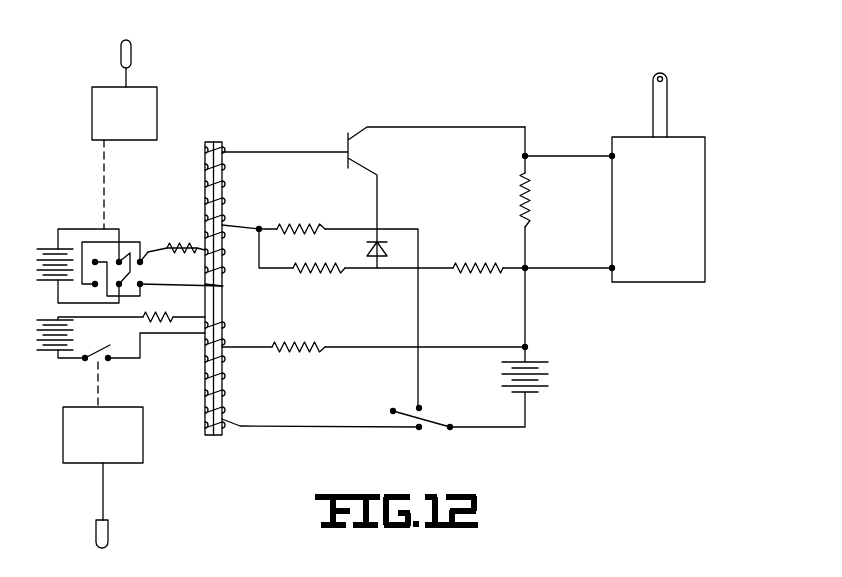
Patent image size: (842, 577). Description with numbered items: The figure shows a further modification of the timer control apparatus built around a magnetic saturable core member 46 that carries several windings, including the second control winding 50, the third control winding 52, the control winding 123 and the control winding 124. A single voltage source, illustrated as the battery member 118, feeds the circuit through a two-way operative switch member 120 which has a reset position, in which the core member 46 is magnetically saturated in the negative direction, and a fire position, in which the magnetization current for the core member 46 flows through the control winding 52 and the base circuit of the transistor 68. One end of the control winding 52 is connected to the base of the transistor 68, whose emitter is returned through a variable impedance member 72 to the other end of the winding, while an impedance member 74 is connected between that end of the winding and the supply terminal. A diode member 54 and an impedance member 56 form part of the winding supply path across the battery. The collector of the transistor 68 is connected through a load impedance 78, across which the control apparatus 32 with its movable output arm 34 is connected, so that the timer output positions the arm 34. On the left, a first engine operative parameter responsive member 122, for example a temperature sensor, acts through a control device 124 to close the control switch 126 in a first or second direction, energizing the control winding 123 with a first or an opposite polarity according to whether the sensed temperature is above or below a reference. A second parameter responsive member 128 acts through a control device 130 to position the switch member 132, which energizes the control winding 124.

The first engine operative parameter responsive member 122 is at (131, 50).
The control device 124 is at (155, 118).
The magnetic saturable core member 46 is at (215, 145).
The third control winding 52 is at (203, 187).
The second control winding 50 is at (205, 385).
The control switch 126 is at (130, 270).
The control winding 123 is at (223, 286).
The switch member 132 is at (98, 350).
The control device 130 is at (140, 445).
The second parameter responsive device 128 is at (105, 532).
The transistor 68 is at (420, 163).
The variable impedance member 72 is at (310, 222).
The impedance member 74 is at (335, 272).
The diode member 54 is at (388, 248).
The load impedance 78 is at (537, 195).
The control apparatus 32 is at (695, 238).
The movable output arm 34 is at (658, 115).
The impedance member 56 is at (310, 353).
The battery member 118 is at (557, 358).
The two-way operative switch member 120 is at (430, 417).